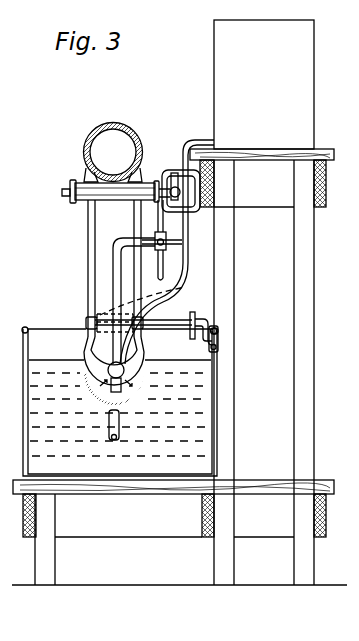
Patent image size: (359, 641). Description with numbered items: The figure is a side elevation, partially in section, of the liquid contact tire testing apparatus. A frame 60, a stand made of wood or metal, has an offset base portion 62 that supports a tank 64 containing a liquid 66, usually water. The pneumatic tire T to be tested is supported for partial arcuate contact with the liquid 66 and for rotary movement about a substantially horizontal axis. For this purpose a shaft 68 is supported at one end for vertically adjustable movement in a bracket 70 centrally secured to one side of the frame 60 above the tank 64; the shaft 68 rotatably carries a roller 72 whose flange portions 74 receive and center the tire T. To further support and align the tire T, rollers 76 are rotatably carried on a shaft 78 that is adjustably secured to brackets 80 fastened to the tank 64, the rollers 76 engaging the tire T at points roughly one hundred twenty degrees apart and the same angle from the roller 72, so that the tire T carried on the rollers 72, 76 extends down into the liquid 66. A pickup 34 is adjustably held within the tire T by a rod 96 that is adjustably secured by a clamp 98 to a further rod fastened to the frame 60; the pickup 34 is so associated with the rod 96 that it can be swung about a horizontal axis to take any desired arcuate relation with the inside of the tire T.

The pneumatic tire T is at (128, 124).
The pickup 34 is at (123, 372).
The frame 60 is at (316, 408).
The offset base portion 62 is at (143, 495).
The tank 64 is at (38, 335).
The liquid 66 is at (52, 370).
The shaft 68 is at (70, 191).
The bracket 70 is at (197, 213).
The roller 72 is at (80, 203).
The flange portions 74 is at (146, 173).
The rollers 76 is at (174, 297).
The shaft 78 is at (164, 319).
The brackets 80 is at (207, 326).
The rod 96 is at (113, 279).
The clamp 98 is at (167, 249).